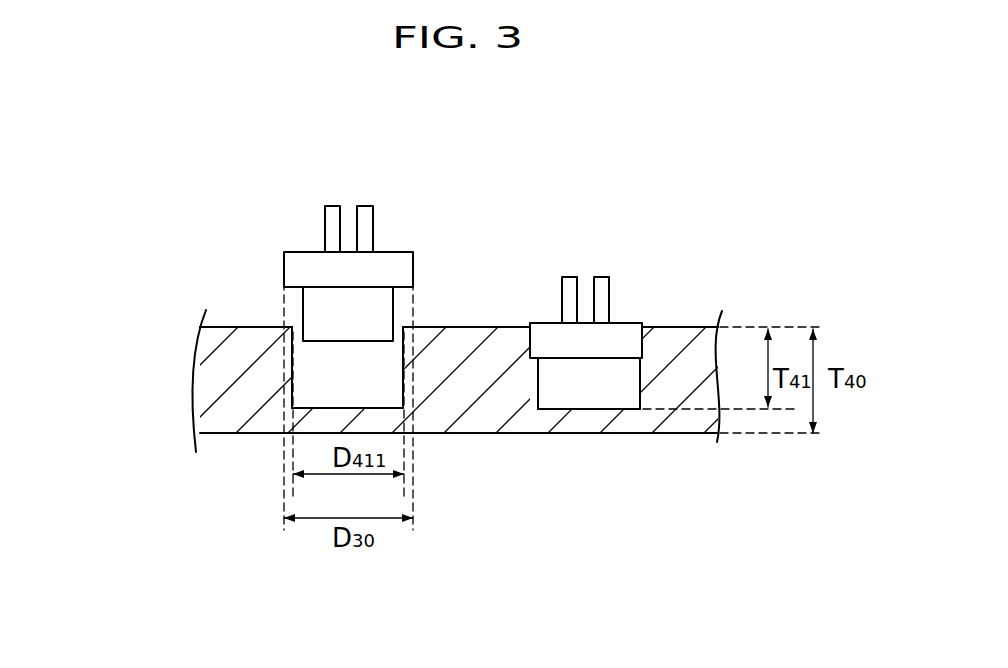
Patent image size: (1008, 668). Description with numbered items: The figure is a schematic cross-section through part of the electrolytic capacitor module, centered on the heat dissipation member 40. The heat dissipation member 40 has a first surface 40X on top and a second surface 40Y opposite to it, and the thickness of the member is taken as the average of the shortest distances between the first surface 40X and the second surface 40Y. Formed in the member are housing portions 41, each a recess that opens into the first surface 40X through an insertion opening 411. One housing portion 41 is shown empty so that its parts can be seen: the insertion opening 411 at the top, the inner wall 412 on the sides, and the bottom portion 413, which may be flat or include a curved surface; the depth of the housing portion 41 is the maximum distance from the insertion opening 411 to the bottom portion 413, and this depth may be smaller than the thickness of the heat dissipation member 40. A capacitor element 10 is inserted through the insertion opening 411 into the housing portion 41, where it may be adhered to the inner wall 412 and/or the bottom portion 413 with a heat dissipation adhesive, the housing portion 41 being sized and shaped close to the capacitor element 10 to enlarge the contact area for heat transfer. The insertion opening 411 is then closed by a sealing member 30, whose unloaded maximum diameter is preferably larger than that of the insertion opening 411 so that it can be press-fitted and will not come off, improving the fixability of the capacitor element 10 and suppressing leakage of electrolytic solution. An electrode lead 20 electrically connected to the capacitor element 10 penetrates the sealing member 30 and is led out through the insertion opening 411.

The capacitor element 10 is at (376, 318).
The electrode lead 20 is at (365, 214).
The sealing member 30 is at (392, 265).
The heat dissipation member 40 is at (488, 355).
The first surface 40X is at (681, 324).
The second surface 40Y is at (688, 440).
The housing portion 41 is at (107, 278).
The insertion opening 411 is at (296, 320).
The inner wall 412 is at (299, 364).
The bottom portion 413 is at (345, 402).